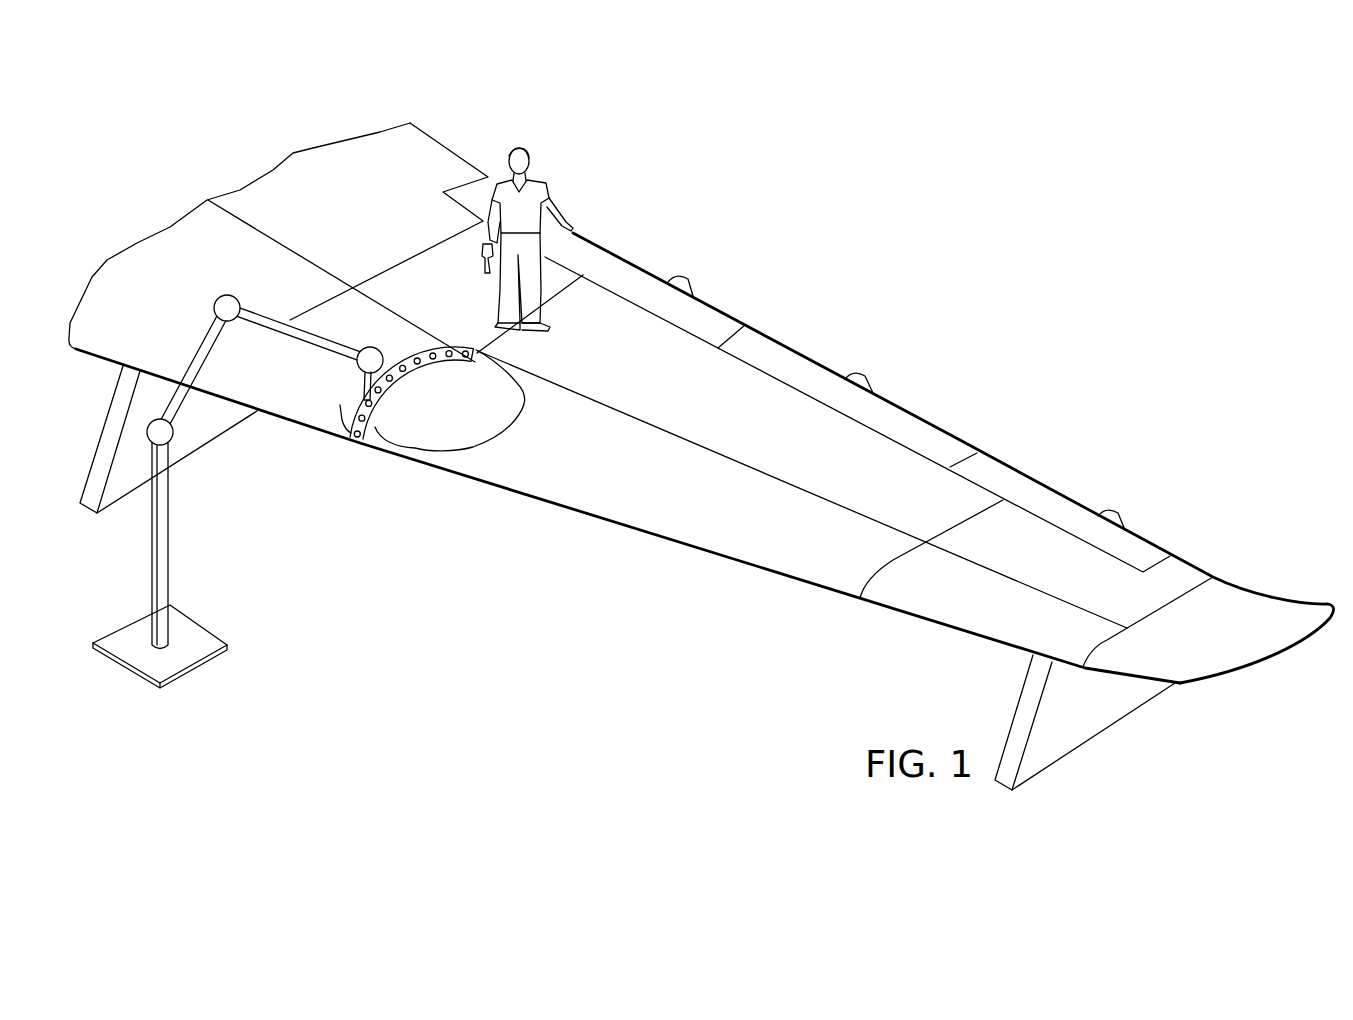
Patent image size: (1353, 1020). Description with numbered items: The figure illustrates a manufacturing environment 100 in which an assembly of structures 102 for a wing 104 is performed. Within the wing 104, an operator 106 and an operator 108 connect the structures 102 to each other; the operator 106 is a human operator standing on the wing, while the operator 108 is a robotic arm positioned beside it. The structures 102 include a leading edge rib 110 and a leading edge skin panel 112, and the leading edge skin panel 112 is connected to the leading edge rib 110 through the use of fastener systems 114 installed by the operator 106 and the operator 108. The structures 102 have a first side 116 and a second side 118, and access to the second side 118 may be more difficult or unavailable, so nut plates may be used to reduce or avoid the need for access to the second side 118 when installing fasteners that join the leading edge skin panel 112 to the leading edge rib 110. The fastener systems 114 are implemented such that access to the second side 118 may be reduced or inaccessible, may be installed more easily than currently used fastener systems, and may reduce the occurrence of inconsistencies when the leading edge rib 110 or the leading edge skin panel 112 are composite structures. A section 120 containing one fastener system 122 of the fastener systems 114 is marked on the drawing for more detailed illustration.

The manufacturing environment 100 is at (826, 266).
The structures 102 is at (350, 268).
The wing 104 is at (282, 176).
The operator 106 is at (517, 143).
The operator 108 is at (152, 558).
The leading edge rib 110 is at (408, 399).
The leading edge skin panel 112 is at (677, 445).
The fastener systems 114 is at (351, 408).
The first side 116 is at (418, 367).
The second side 118 is at (380, 441).
The section 120 is at (446, 368).
The fastener system 122 is at (442, 348).